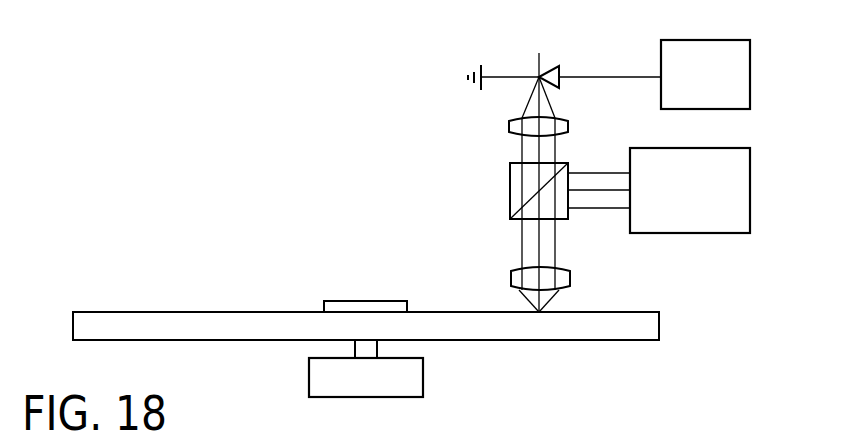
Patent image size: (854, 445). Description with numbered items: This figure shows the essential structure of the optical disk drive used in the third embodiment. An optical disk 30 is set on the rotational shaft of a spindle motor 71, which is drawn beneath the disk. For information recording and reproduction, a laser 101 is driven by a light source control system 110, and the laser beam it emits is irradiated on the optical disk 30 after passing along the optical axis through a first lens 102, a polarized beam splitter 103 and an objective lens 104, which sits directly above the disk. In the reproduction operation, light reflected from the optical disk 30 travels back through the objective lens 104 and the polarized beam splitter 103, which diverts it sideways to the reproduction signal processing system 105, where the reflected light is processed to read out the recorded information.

The laser 101 is at (557, 66).
The first lens 102 is at (510, 126).
The polarized beam splitter 103 is at (510, 200).
The objective lens 104 is at (510, 287).
The reproduction signal processing system 105 is at (750, 200).
The light source control system 110 is at (750, 92).
The optical disk 30 is at (659, 330).
The spindle motor 71 is at (423, 385).